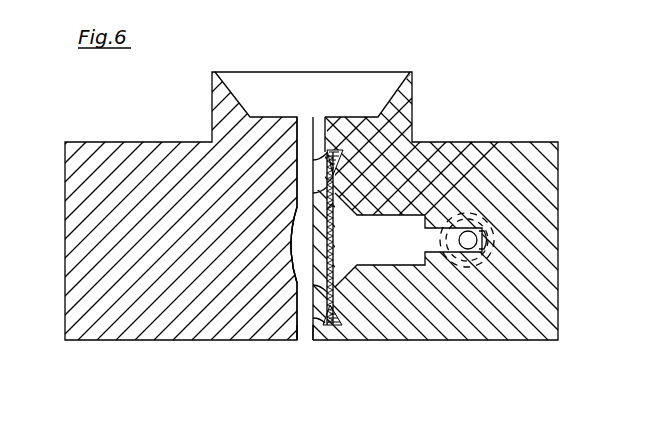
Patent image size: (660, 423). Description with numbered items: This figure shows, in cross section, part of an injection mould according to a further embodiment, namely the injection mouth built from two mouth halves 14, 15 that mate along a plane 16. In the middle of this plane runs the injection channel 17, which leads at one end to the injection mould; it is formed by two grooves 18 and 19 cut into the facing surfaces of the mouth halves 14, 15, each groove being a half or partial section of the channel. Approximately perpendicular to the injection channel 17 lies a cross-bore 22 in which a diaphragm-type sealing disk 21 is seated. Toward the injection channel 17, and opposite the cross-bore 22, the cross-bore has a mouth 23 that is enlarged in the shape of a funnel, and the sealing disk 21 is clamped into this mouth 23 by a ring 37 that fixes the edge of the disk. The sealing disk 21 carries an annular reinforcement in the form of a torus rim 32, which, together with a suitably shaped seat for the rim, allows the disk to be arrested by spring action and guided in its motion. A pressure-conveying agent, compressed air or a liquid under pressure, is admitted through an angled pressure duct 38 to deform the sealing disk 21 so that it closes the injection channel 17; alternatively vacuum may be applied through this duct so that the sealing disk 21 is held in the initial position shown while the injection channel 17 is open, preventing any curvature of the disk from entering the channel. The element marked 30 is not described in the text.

The mouth half 14 is at (515, 157).
The mouth half 15 is at (107, 178).
The plane 16 is at (308, 330).
The injection channel 17 is at (303, 132).
The groove 18 is at (324, 337).
The groove 19 is at (301, 328).
The sealing disk 21 is at (398, 230).
The cross-bore 22 is at (476, 144).
The mouth 23 is at (337, 288).
The valve seat recess 30 is at (288, 222).
The torus rim 32 is at (340, 156).
The ring 37 is at (320, 167).
The angled pressure duct 38 is at (483, 242).